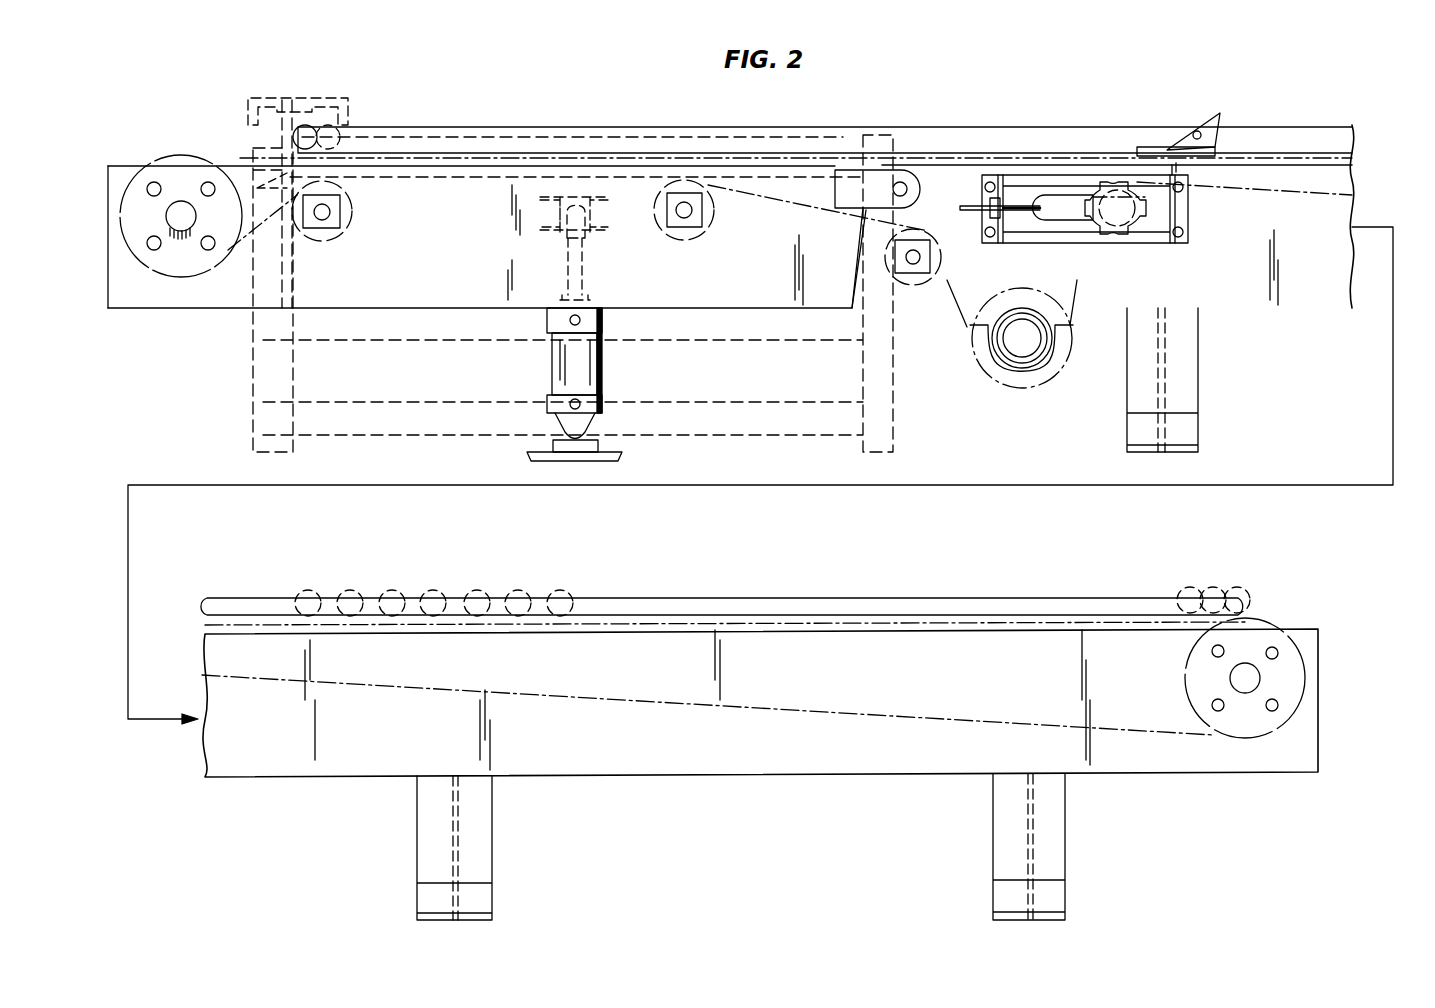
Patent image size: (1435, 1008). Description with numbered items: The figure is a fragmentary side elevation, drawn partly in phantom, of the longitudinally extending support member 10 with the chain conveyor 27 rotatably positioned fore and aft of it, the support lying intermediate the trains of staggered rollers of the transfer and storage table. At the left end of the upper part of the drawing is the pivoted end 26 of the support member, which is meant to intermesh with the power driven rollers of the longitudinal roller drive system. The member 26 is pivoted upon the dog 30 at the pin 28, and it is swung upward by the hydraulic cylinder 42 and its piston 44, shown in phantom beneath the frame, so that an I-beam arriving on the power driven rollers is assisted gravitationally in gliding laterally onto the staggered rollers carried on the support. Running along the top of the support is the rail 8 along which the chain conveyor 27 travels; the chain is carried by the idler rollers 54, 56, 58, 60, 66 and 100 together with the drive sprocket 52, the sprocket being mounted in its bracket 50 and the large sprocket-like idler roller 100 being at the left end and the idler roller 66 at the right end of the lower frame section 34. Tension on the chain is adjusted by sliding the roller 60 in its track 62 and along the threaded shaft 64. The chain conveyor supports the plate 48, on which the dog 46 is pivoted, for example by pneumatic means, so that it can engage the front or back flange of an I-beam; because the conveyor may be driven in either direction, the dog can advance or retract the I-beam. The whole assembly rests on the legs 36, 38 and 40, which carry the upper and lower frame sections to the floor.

The guide rail 8 is at (842, 142).
The longitudinally extending support member 10 is at (108, 262).
The pivoted end 26 is at (462, 252).
The chain conveyor 27 is at (900, 218).
The pin 28 is at (908, 190).
The dog 30 is at (850, 205).
The lower frame 34 is at (272, 742).
The leg 36 is at (1214, 416).
The leg 38 is at (483, 872).
The leg 40 is at (1058, 865).
The hydraulic cylinder 42 is at (598, 368).
The piston 44 is at (580, 275).
The dog 46 is at (1218, 124).
The plate 48 is at (1203, 156).
The bearing bracket 50 is at (1083, 268).
The drive sprocket 52 is at (1030, 352).
The idler roller 54 is at (920, 274).
The idler roller 56 is at (690, 228).
The idler roller 58 is at (332, 228).
The idler roller 60 is at (1138, 222).
The track 62 is at (1086, 224).
The threaded shaft 64 is at (1018, 222).
The idler roller 66 is at (1197, 685).
The idler roller 100 is at (190, 182).